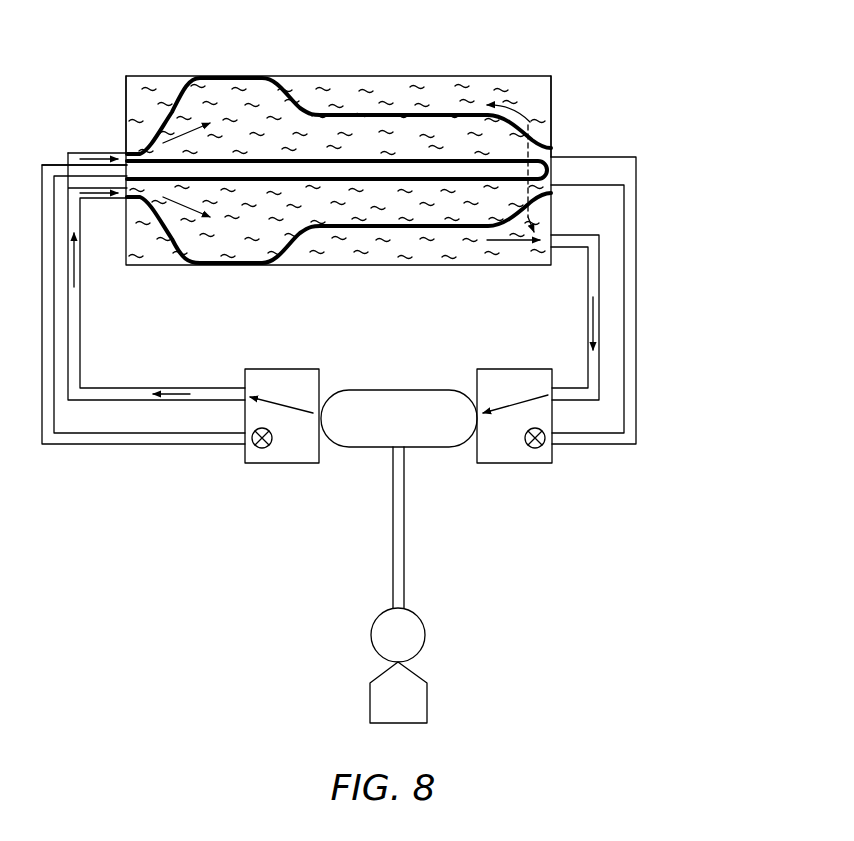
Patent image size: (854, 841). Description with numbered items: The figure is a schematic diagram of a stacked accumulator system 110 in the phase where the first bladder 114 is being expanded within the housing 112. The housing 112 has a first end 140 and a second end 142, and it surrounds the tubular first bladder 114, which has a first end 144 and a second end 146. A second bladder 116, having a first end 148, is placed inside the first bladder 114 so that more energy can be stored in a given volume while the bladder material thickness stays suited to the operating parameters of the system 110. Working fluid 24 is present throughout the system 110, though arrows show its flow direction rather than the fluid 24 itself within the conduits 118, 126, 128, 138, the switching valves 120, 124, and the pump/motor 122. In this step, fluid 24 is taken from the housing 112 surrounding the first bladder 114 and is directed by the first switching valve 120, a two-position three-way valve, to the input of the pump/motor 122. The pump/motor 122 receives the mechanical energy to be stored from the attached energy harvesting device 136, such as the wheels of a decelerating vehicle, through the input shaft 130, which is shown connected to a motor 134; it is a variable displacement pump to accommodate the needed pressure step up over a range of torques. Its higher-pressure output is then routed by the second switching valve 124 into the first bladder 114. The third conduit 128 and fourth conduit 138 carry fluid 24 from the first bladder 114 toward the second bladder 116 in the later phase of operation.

The system 110 is at (678, 60).
The housing 112 is at (372, 76).
The working fluid 24 is at (453, 93).
The first bladder 114 is at (245, 100).
The second bladder 116 is at (232, 168).
The conduit 118 is at (592, 283).
The first switching valve 120 is at (503, 452).
The pump/motor 122 is at (384, 431).
The second switching valve 124 is at (290, 452).
The conduit 126 is at (127, 397).
The third conduit 128 is at (628, 258).
The input shaft 130 is at (398, 568).
The motor 134 is at (384, 652).
The energy harvesting device 136 is at (384, 713).
The fourth conduit 138 is at (122, 438).
The first end of housing 140 is at (552, 98).
The second end of housing 142 is at (126, 85).
The first end of first bladder 144 is at (535, 132).
The second end of first bladder 146 is at (152, 146).
The first end of second bladder 148 is at (140, 157).